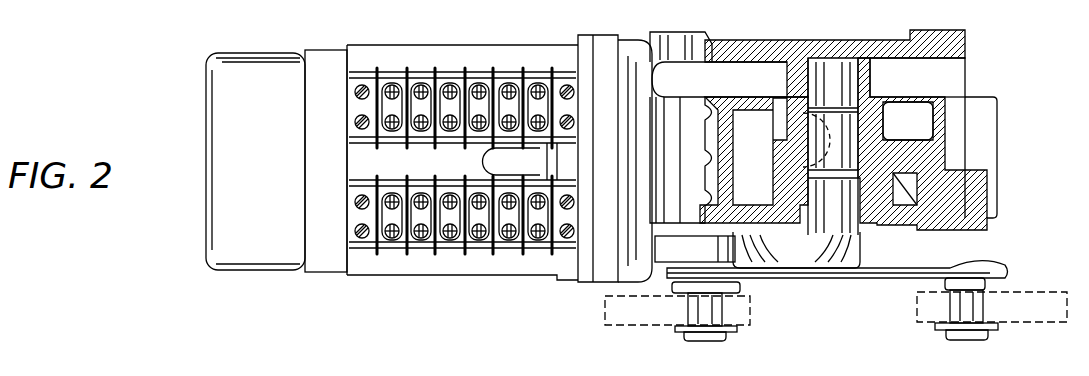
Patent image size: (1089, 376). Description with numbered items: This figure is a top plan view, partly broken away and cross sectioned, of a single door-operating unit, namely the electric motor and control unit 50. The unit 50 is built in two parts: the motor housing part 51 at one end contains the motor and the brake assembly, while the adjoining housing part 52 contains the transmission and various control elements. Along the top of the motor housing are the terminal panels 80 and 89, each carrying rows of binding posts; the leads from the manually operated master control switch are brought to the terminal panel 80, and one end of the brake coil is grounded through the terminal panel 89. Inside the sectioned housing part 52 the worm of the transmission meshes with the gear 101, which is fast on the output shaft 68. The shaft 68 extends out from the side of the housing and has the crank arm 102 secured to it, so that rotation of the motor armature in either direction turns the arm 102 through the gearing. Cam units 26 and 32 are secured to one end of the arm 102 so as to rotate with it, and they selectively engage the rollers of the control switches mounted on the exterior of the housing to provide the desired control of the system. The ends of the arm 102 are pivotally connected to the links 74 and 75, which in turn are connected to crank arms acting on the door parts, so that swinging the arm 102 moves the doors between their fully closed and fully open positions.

The cam unit 26 is at (716, 250).
The cam unit 32 is at (730, 254).
The electric motor and control unit 50 is at (608, 16).
The motor housing part 51 is at (325, 276).
The transmission housing part 52 is at (848, 16).
The output shaft 68 is at (840, 80).
The link 74 is at (623, 306).
The link 75 is at (1040, 300).
The terminal panel 80 is at (481, 90).
The terminal panel 89 is at (480, 245).
The gear 101 is at (900, 152).
The crank arm 102 is at (775, 280).